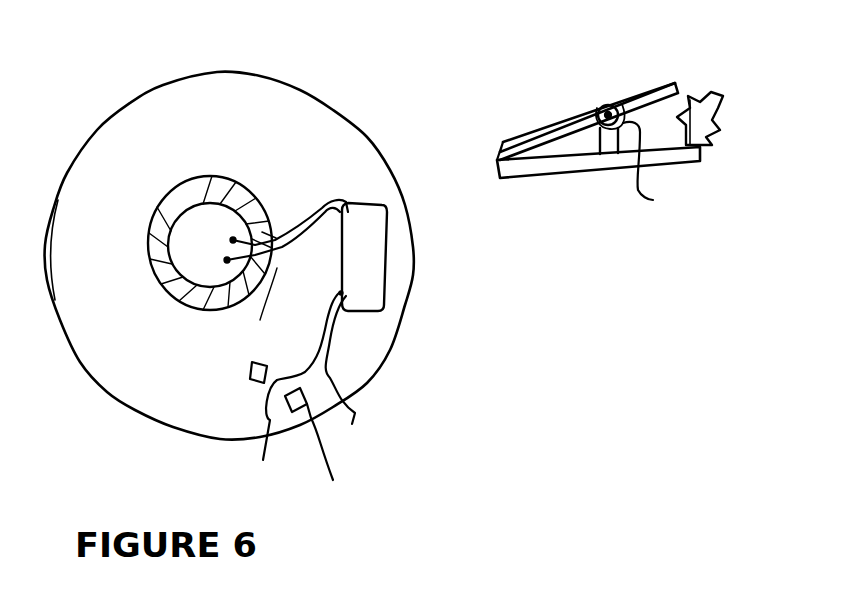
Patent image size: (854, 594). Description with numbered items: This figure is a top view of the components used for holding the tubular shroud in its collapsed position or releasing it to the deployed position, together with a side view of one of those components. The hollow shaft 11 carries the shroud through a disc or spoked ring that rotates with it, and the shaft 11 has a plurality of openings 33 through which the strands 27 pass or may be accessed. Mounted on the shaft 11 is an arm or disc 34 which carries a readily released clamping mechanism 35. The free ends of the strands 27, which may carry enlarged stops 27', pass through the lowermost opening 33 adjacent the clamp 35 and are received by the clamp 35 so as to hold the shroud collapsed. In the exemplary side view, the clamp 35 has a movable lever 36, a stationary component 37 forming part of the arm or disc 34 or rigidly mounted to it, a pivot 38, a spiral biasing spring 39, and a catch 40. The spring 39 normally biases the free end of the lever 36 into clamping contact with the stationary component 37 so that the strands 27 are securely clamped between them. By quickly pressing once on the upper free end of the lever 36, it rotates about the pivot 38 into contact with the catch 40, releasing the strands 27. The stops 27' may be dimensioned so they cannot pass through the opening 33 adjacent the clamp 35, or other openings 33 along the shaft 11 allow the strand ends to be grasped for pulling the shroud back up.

The shaft 11 is at (230, 184).
The strands 27 is at (325, 440).
The enlarged stops 27' is at (340, 460).
The openings 33 is at (248, 353).
The arm or disc 34 is at (130, 385).
The clamping mechanism 35 is at (405, 292).
The movable lever 36 is at (540, 142).
The stationary component 37 is at (542, 163).
The pivot 38 is at (608, 110).
The spiral biasing spring 39 is at (655, 185).
The catch 40 is at (692, 100).